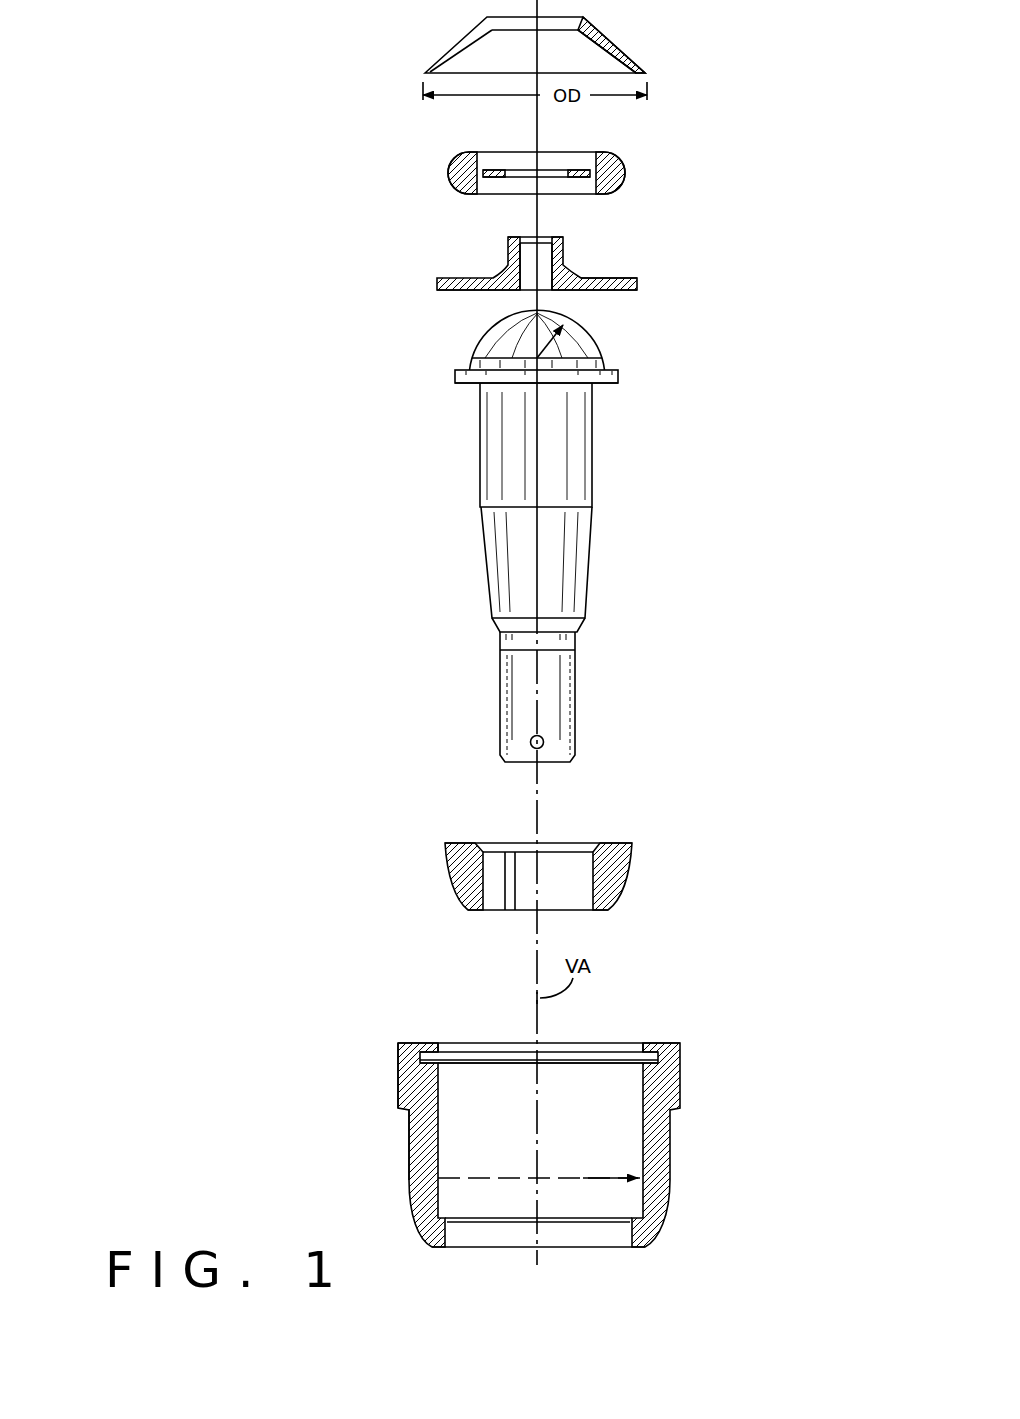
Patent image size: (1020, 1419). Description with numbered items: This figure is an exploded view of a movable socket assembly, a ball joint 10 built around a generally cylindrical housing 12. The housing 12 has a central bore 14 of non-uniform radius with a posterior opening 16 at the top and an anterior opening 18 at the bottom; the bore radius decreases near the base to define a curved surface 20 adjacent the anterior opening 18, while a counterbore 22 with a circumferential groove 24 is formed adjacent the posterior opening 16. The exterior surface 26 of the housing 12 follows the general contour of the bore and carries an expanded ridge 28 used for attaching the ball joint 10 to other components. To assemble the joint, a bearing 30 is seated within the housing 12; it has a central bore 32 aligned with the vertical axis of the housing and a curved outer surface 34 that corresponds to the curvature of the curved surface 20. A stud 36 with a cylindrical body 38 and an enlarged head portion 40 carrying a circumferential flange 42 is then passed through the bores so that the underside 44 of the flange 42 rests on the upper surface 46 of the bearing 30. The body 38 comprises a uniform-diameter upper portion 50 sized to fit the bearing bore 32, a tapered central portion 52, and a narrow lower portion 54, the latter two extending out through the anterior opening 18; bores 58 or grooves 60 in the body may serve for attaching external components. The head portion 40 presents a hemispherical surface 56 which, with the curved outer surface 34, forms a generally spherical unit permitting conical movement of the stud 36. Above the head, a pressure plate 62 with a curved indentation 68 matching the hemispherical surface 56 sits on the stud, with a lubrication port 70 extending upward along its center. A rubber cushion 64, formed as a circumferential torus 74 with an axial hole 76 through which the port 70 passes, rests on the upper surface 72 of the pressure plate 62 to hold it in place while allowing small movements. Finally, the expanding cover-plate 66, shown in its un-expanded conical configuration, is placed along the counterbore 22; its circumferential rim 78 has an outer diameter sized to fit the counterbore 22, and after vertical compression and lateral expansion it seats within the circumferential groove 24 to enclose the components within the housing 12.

The ball joint 10 is at (648, 500).
The housing 12 is at (544, 1125).
The central bore 14 is at (607, 1094).
The posterior opening 16 is at (592, 1038).
The anterior opening 18 is at (573, 1258).
The curved surface 20 is at (632, 1210).
The counterbore 22 is at (643, 1043).
The circumferential groove 24 is at (437, 1062).
The exterior surface 26 is at (410, 1168).
The expanded ridge 28 is at (398, 1087).
The bearing 30 is at (547, 866).
The central bore 32 is at (570, 890).
The curved outer surface 34 is at (452, 883).
The stud 36 is at (521, 533).
The cylindrical body 38 is at (580, 466).
The head portion 40 is at (535, 340).
The circumferential flange 42 is at (617, 372).
The underside 44 is at (465, 387).
The upper surface 46 is at (613, 842).
The upper portion 50 is at (581, 445).
The central portion 52 is at (590, 562).
The lower portion 54 is at (542, 690).
The hemispherical surface 56 is at (483, 337).
The bores 58 is at (540, 735).
The grooves 60 is at (503, 695).
The pressure plate 62 is at (561, 263).
The rubber cushion 64 is at (560, 154).
The expanding cover-plate 66 is at (563, 37).
The curved indentation 68 is at (514, 284).
The lubrication port 70 is at (507, 250).
The upper surface 72 is at (613, 273).
The circumferential torus 74 is at (460, 153).
The axial hole 76 is at (550, 173).
The circumferential rim 78 is at (422, 67).